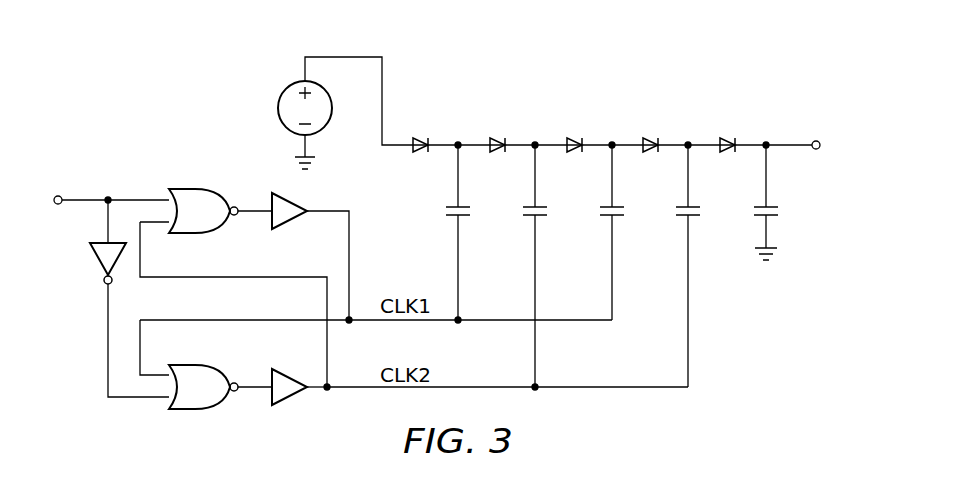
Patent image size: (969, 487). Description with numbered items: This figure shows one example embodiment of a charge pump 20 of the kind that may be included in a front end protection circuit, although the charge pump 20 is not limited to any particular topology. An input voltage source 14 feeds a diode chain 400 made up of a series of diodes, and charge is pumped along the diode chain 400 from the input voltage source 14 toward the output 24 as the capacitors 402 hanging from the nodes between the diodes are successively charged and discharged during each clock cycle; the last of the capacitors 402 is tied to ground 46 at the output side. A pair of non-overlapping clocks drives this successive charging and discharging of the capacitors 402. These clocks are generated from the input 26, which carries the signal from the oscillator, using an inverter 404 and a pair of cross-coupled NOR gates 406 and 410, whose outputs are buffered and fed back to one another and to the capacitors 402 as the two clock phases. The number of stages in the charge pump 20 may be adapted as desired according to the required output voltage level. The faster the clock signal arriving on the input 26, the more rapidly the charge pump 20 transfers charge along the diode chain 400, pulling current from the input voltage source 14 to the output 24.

The charge pump 20 is at (734, 60).
The input voltage source 14 is at (278, 105).
The diode chain 400 is at (416, 85).
The output 24 is at (789, 143).
The capacitors 402 is at (828, 214).
The ground 46 is at (777, 258).
The input 26 is at (87, 199).
The NOR gate 406 is at (205, 189).
The inverter 404 is at (97, 262).
The NOR gate 410 is at (202, 410).